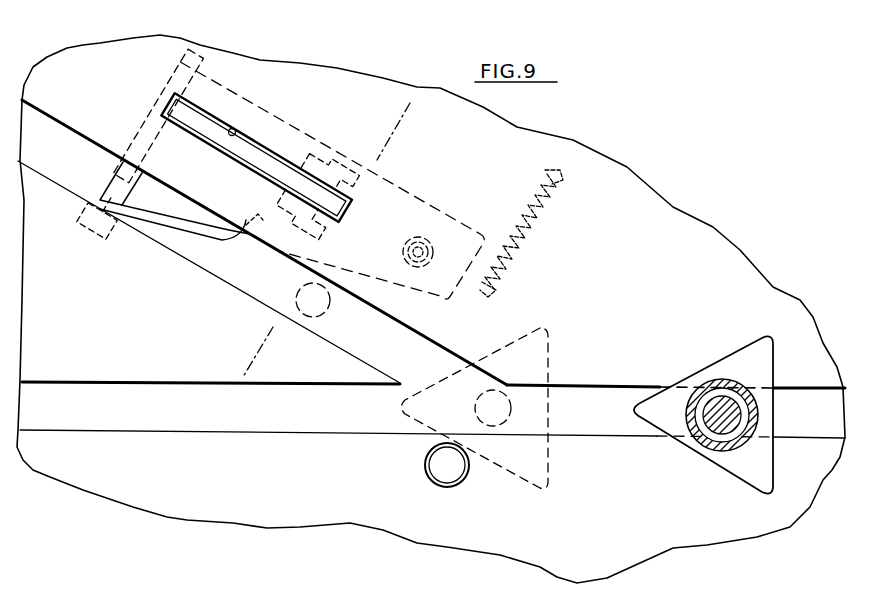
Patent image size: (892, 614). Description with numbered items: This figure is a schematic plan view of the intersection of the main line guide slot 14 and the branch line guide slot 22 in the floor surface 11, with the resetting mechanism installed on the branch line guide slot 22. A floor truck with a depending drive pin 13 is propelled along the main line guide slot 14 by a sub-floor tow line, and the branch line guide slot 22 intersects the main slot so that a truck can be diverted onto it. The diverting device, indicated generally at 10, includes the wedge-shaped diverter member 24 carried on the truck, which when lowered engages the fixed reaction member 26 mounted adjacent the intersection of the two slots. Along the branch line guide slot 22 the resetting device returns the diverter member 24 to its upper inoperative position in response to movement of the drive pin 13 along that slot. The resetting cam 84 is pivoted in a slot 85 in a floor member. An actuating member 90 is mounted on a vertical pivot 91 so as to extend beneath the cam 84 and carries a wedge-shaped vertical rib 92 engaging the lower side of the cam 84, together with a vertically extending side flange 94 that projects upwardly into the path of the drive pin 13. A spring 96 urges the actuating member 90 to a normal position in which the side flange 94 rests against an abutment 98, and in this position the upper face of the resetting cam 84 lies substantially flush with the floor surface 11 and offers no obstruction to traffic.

The section line indicator 10 is at (396, 127).
The surface 11 is at (667, 271).
The drive pin 13 is at (294, 309).
The main line guide slot 14 is at (589, 427).
The branch line guide slot 22 is at (408, 342).
The wedge-shaped diverter member 24 is at (705, 362).
The fixed reaction member 26 is at (448, 474).
The resetting cam 84 is at (262, 170).
The slot 85 is at (236, 130).
The actuating member 90 is at (437, 208).
The vertical pivot 91 is at (434, 253).
The wedge-shaped vertical rib 92 is at (157, 160).
The side flange 94 is at (180, 222).
The spring 96 is at (513, 262).
The abutment 98 is at (99, 226).